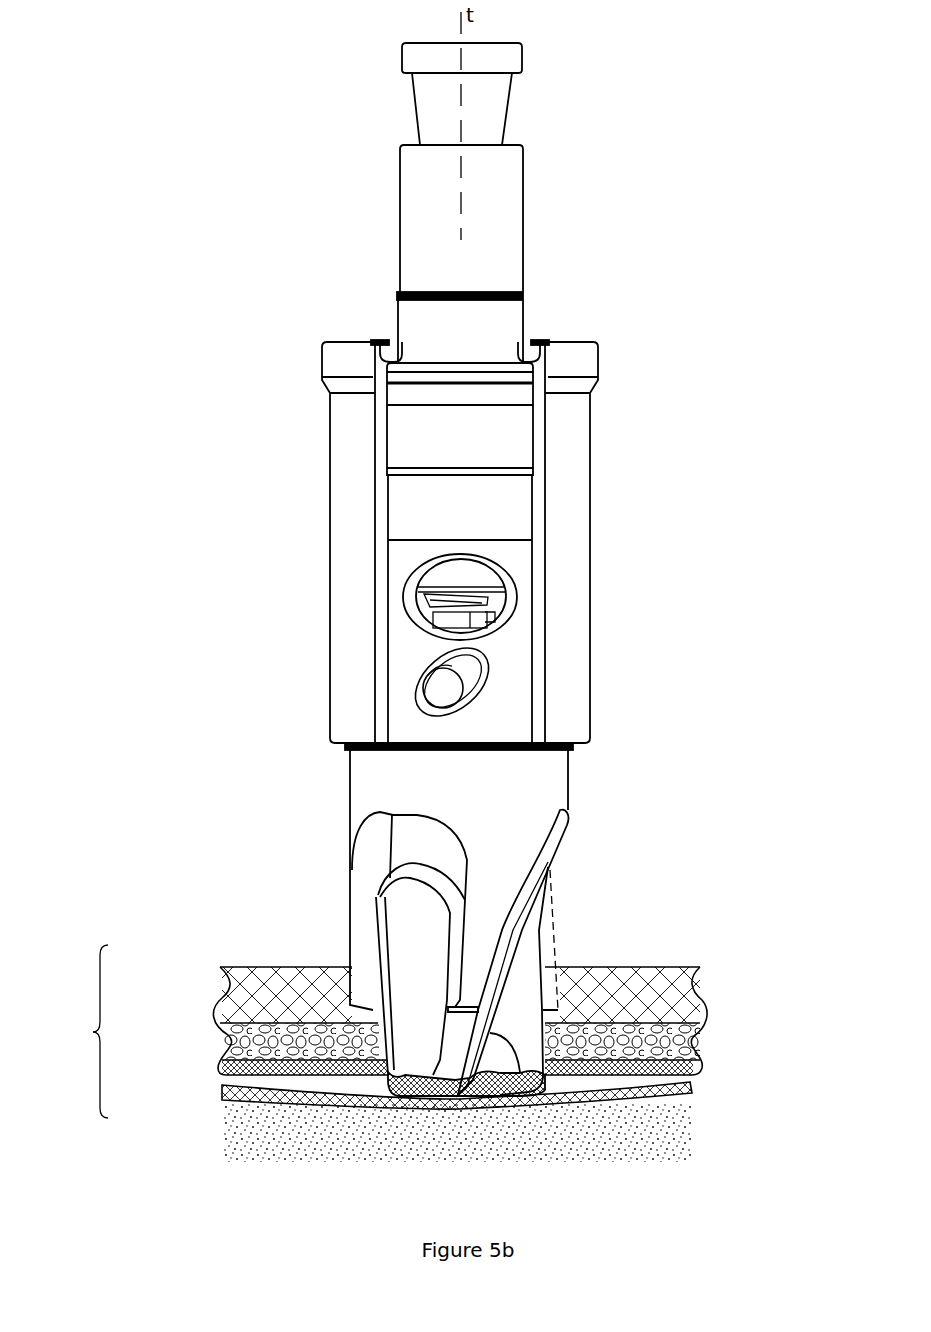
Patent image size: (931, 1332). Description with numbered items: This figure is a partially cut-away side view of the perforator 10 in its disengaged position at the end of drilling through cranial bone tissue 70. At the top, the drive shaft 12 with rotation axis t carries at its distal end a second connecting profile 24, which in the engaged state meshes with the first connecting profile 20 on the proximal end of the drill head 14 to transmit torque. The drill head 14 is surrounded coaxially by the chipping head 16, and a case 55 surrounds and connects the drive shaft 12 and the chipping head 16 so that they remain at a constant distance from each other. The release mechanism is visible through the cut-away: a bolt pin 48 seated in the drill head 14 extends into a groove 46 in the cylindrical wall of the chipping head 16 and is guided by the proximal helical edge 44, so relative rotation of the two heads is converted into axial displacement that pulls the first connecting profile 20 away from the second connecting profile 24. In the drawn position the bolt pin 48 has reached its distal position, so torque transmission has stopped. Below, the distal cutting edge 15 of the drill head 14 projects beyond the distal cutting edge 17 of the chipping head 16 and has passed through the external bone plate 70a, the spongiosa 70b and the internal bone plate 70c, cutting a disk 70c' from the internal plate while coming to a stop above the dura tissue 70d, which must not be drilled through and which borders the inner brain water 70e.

The perforator 10 is at (272, 249).
The drive shaft 12 is at (523, 228).
The case 55 is at (590, 497).
The second connecting profile 24 is at (497, 598).
The first connecting profile 20 is at (492, 620).
The proximal helical edge 44 is at (438, 664).
The groove 46 is at (465, 668).
The bolt pin 48 is at (444, 688).
The chipping head 16 is at (570, 785).
The drill head 14 is at (347, 928).
The distal cutting edge of chipping head 17 is at (508, 922).
The distal cutting edge of drill head 15 is at (532, 1097).
The bone tissue 70 is at (73, 1031).
The external bone plate 70a is at (278, 990).
The spongiosa 70b is at (258, 1046).
The internal bone plate 70c is at (473, 1095).
The disk 70c' is at (468, 1142).
The dura tissue 70d is at (683, 1094).
The inner brain water 70e is at (672, 1138).